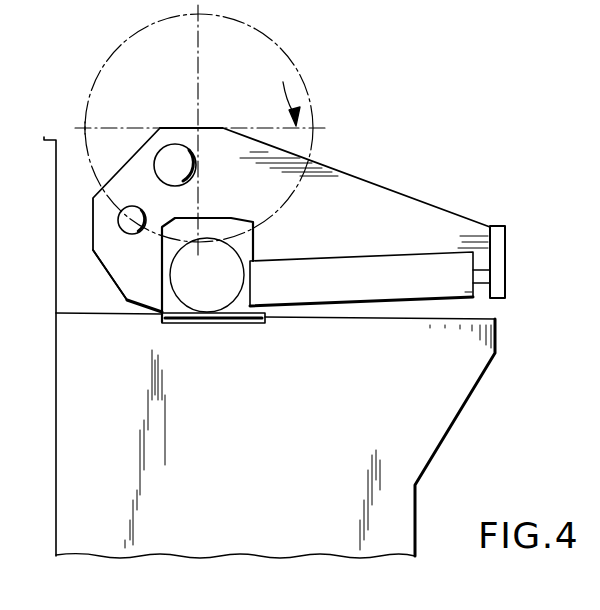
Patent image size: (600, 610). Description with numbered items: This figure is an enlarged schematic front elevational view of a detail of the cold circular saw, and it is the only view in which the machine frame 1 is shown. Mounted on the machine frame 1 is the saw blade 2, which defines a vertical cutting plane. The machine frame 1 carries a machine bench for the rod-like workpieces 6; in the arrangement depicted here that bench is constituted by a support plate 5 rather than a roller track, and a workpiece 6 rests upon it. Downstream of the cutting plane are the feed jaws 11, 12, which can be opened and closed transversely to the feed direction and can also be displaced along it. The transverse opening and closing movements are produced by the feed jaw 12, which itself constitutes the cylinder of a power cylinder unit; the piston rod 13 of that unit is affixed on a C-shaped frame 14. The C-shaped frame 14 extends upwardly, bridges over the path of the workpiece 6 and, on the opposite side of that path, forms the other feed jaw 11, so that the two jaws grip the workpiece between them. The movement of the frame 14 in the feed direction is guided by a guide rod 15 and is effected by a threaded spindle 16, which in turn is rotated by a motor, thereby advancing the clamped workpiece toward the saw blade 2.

The machine frame 1 is at (240, 490).
The saw blade 2 is at (114, 68).
The support plate 5 is at (177, 313).
The rod-like workpiece 6 is at (220, 300).
The feed jaw 11 is at (158, 298).
The feed jaw 12 is at (250, 292).
The piston rod 13 is at (480, 290).
The C-shaped frame 14 is at (378, 188).
The guide rod 15 is at (154, 170).
The threaded spindle 16 is at (118, 225).